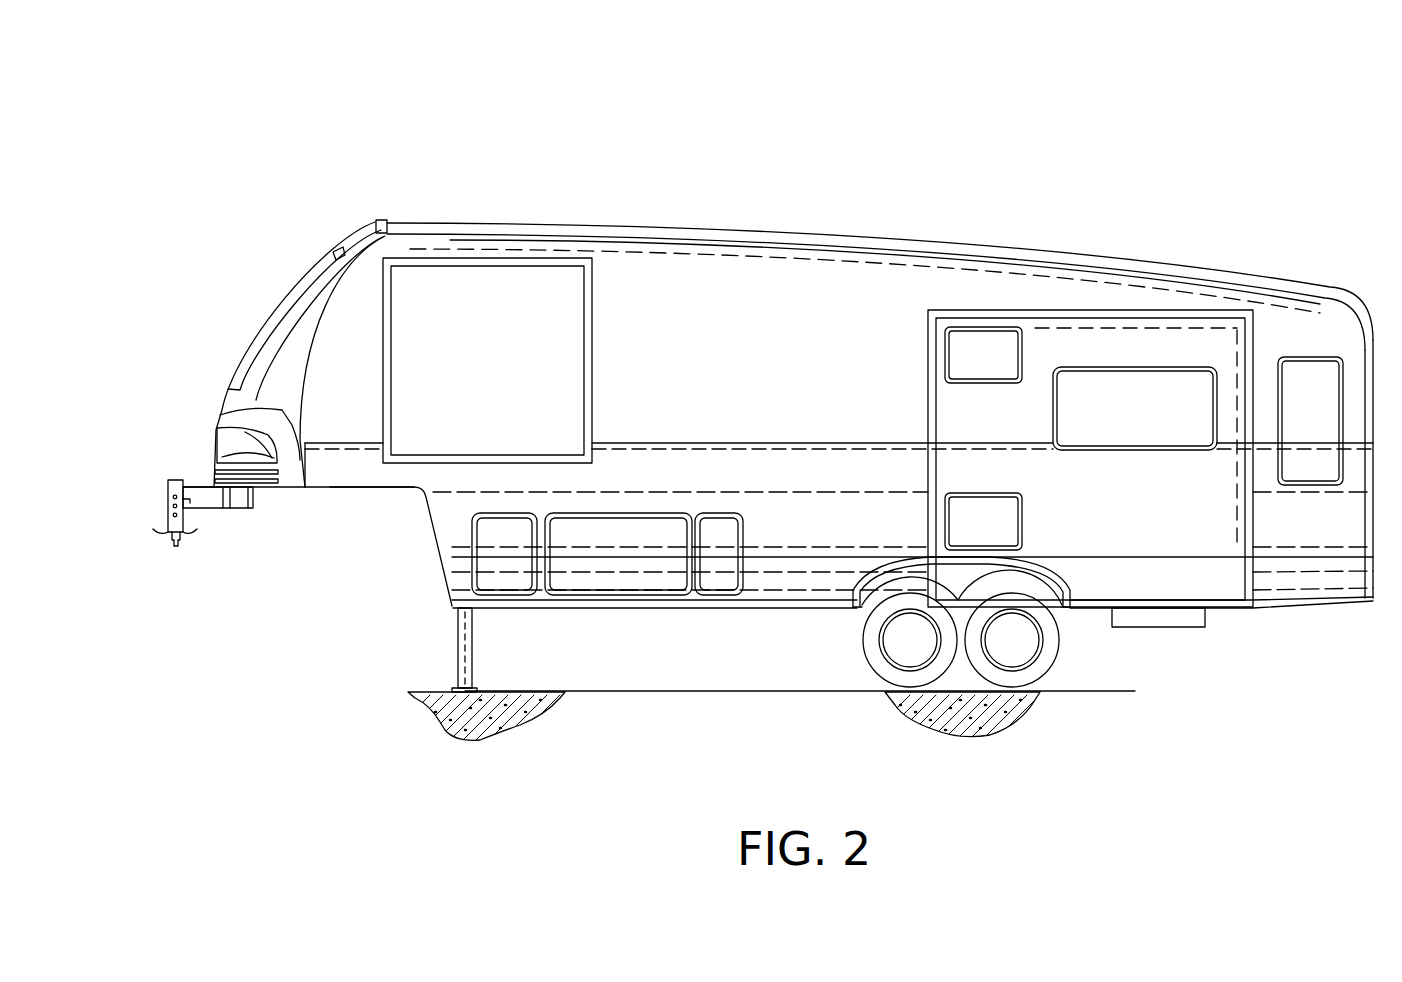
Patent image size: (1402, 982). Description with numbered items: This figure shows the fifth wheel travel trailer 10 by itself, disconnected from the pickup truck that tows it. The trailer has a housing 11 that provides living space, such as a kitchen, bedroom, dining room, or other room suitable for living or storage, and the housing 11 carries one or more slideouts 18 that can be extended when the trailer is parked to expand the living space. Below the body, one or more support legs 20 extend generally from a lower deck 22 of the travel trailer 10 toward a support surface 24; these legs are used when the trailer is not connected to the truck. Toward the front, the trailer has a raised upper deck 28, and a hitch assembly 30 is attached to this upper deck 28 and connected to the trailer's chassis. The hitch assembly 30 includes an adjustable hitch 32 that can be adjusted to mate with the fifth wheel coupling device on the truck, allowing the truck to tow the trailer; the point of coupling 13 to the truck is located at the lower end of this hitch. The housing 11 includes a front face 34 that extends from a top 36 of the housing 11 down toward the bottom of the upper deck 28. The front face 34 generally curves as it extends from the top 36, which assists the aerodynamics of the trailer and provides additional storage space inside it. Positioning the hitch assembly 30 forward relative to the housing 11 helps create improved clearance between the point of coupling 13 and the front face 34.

The fifth wheel travel trailer 10 is at (818, 188).
The housing 11 is at (621, 222).
The point of coupling 13 is at (175, 547).
The slideouts 18 is at (467, 280).
The support legs 20 is at (457, 643).
The lower deck 22 is at (708, 612).
The support surface 24 is at (433, 692).
The upper deck 28 is at (360, 490).
The hitch assembly 30 is at (179, 468).
The adjustable hitch 32 is at (168, 515).
The front face 34 is at (278, 283).
The top 36 is at (378, 220).